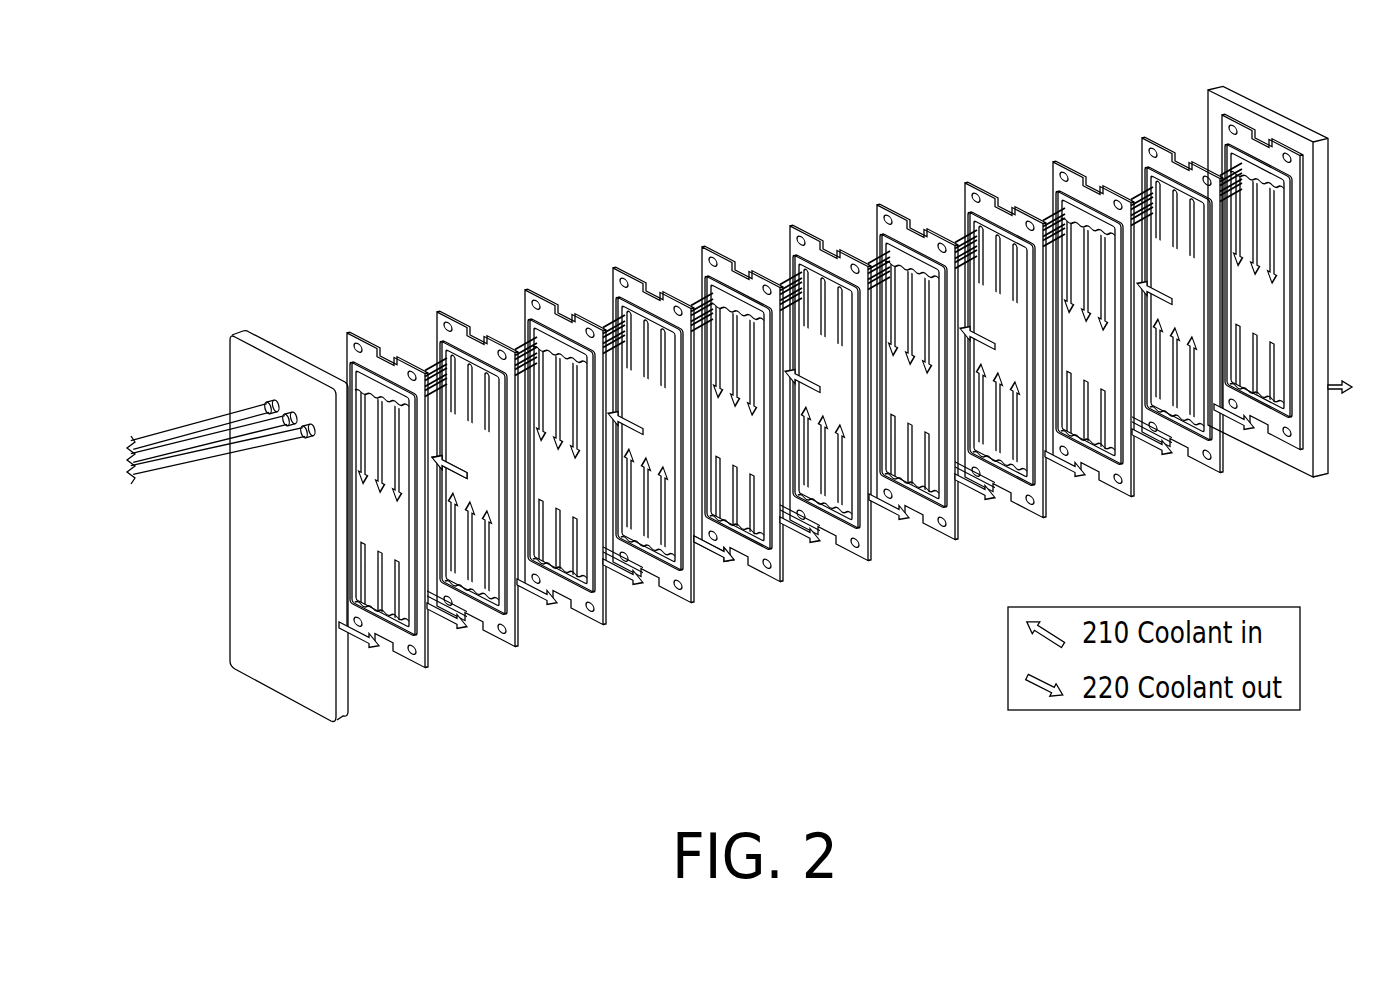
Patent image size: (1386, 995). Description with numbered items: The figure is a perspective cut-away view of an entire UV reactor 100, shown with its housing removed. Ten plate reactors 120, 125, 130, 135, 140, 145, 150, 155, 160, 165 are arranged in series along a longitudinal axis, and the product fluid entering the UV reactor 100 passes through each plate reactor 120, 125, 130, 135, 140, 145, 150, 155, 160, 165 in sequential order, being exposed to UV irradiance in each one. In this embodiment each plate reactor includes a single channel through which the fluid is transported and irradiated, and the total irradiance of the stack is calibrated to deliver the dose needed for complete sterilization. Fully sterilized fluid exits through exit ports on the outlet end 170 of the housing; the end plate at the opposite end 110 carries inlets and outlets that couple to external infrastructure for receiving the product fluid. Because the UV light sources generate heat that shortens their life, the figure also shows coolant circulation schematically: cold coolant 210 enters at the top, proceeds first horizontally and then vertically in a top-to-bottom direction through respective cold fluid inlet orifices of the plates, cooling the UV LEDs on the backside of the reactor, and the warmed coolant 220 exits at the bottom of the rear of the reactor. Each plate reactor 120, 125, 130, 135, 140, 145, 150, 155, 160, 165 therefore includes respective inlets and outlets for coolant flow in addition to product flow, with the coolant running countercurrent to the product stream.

The UV reactor 100 is at (739, 370).
The first end plate 110 is at (236, 335).
The plate reactor 120 is at (368, 335).
The plate reactor 125 is at (449, 317).
The plate reactor 130 is at (537, 295).
The plate reactor 135 is at (622, 272).
The plate reactor 140 is at (709, 251).
The plate reactor 145 is at (812, 237).
The plate reactor 150 is at (887, 210).
The plate reactor 155 is at (975, 188).
The plate reactor 160 is at (1062, 167).
The plate reactor 165 is at (1162, 148).
The outlet end 170 is at (1265, 118).
The cold coolant 210 is at (455, 476).
The coolant outlet flow 220 is at (703, 562).